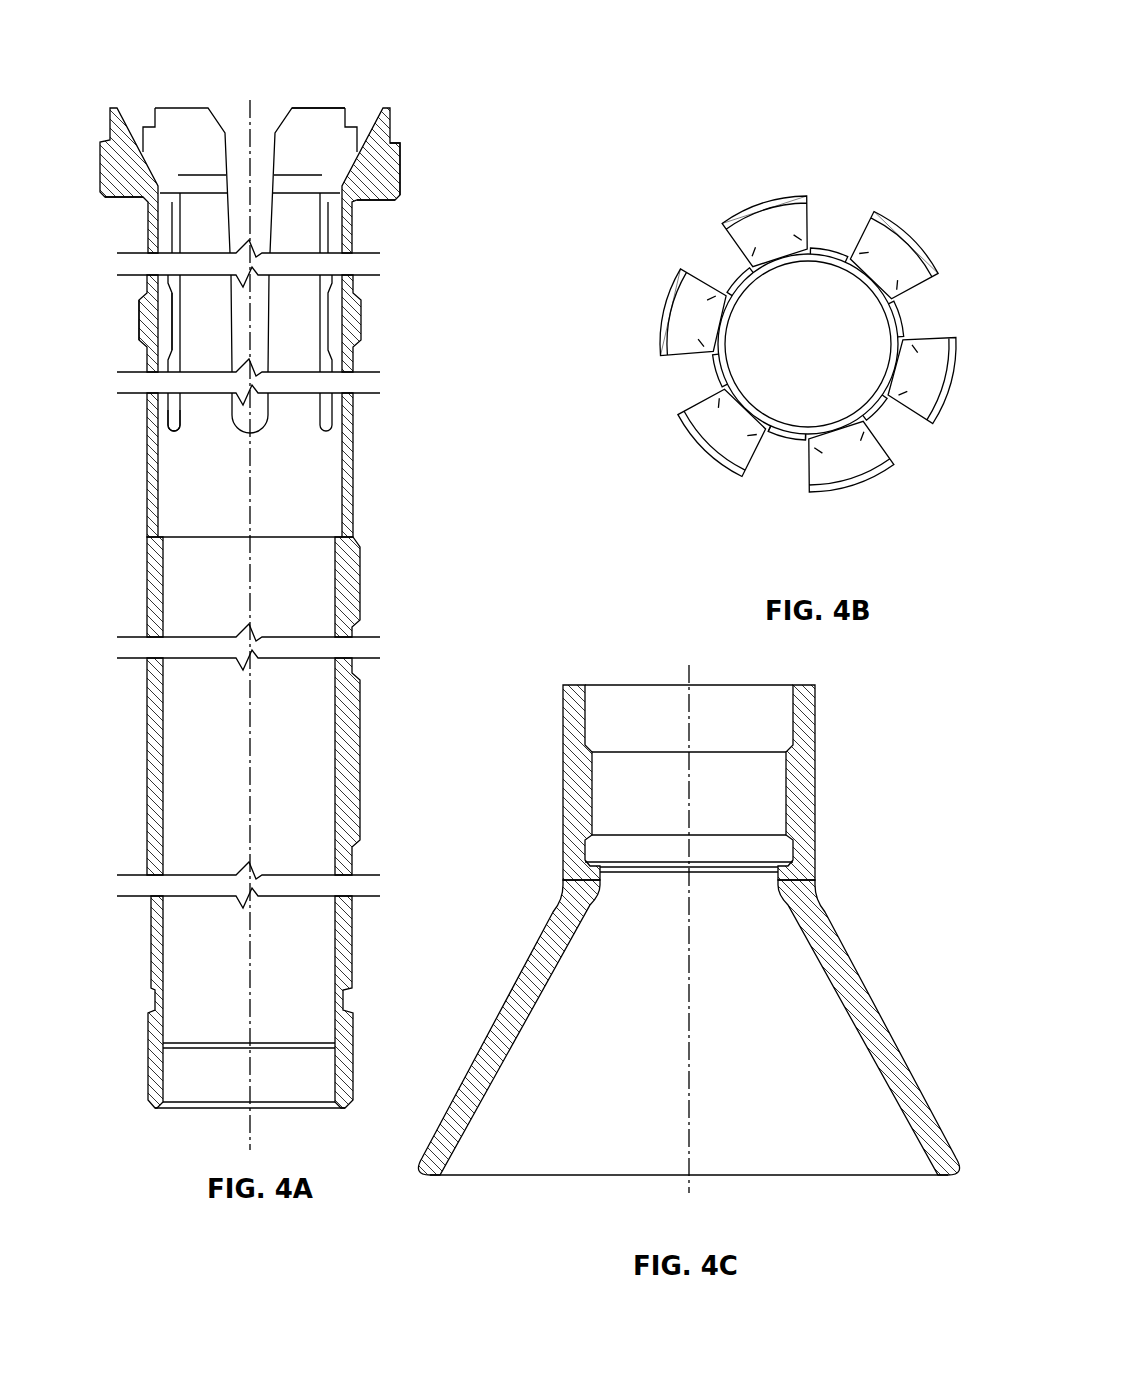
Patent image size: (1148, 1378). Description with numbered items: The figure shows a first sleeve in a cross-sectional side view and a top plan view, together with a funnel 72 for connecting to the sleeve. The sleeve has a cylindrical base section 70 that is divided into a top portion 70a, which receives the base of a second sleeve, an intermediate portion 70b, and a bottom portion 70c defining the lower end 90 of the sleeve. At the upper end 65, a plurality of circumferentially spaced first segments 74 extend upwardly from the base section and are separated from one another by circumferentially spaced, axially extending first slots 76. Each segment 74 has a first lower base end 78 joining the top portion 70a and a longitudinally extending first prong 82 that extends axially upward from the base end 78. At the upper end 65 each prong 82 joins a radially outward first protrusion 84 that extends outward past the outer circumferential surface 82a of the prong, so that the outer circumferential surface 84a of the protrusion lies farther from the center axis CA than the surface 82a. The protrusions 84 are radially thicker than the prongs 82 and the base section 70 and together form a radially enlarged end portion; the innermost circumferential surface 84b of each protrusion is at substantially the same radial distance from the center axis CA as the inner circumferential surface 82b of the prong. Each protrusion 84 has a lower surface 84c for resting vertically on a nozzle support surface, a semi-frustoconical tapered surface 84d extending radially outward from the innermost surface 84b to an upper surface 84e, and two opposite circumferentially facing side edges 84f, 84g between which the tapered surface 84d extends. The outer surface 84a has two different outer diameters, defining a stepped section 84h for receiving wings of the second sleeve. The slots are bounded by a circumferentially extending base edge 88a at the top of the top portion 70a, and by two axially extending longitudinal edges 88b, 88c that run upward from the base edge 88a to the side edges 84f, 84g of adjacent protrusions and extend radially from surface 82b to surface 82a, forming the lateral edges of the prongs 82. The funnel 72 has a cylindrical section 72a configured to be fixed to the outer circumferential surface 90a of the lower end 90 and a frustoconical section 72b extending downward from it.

In FIG. 4A, the upper end 65 is at (273, 222).
In FIG. 4A, the cylindrical base section 70 is at (295, 756).
In FIG. 4A, the top portion 70a is at (352, 515).
In FIG. 4A, the intermediate portion 70b is at (343, 743).
In FIG. 4A, the bottom portion 70c is at (347, 1060).
In FIG. 4C, the funnel 72 is at (688, 978).
In FIG. 4C, the cylindrical section 72a is at (573, 803).
In FIG. 4C, the frustoconical section 72b is at (510, 1017).
In FIG. 4A, the first segments 74 is at (186, 102).
In FIG. 4B, the first segments 74 is at (746, 201).
In FIG. 4A, the first slots 76 is at (224, 92).
In FIG. 4B, the first slots 76 is at (868, 186).
In FIG. 4A, the first lower base end 78 is at (248, 377).
In FIG. 4A, the first prong 82 is at (249, 377).
In FIG. 4A, the outer circumferential surface 82a is at (352, 248).
In FIG. 4A, the inner circumferential surface 82b is at (150, 248).
In FIG. 4B, the inner circumferential surface 82b is at (723, 337).
In FIG. 4A, the radially outward first protrusion 84 is at (273, 132).
In FIG. 4B, the radially outward first protrusion 84 is at (763, 314).
In FIG. 4A, the outer circumferential surface 84a is at (400, 183).
In FIG. 4B, the outer circumferential surface 84a is at (657, 345).
In FIG. 4A, the innermost circumferential surface 84b is at (400, 201).
In FIG. 4A, the lower surface 84c is at (120, 198).
In FIG. 4A, the tapered surface 84d is at (310, 127).
In FIG. 4B, the tapered surface 84d is at (710, 430).
In FIG. 4A, the upper surface 84e is at (112, 106).
In FIG. 4B, the upper surface 84e is at (715, 463).
In FIG. 4A, the first side edge 84f is at (160, 163).
In FIG. 4B, the first side edge 84f is at (735, 247).
In FIG. 4A, the second side edge 84g is at (330, 165).
In FIG. 4B, the second side edge 84g is at (810, 223).
In FIG. 4A, the stepped section 84h is at (408, 107).
In FIG. 4B, the stepped section 84h is at (786, 192).
In FIG. 4A, the base edge 88a is at (182, 420).
In FIG. 4B, the base edge 88a is at (777, 443).
In FIG. 4A, the first longitudinal edge 88b is at (147, 337).
In FIG. 4B, the first longitudinal edge 88b is at (795, 448).
In FIG. 4A, the second longitudinal edge 88c is at (173, 305).
In FIG. 4B, the second longitudinal edge 88c is at (773, 443).
In FIG. 4A, the lower end 90 is at (198, 1092).
In FIG. 4A, the outer circumferential surface 90a is at (153, 1050).
In FIG. 4A, the center axis CA is at (250, 497).